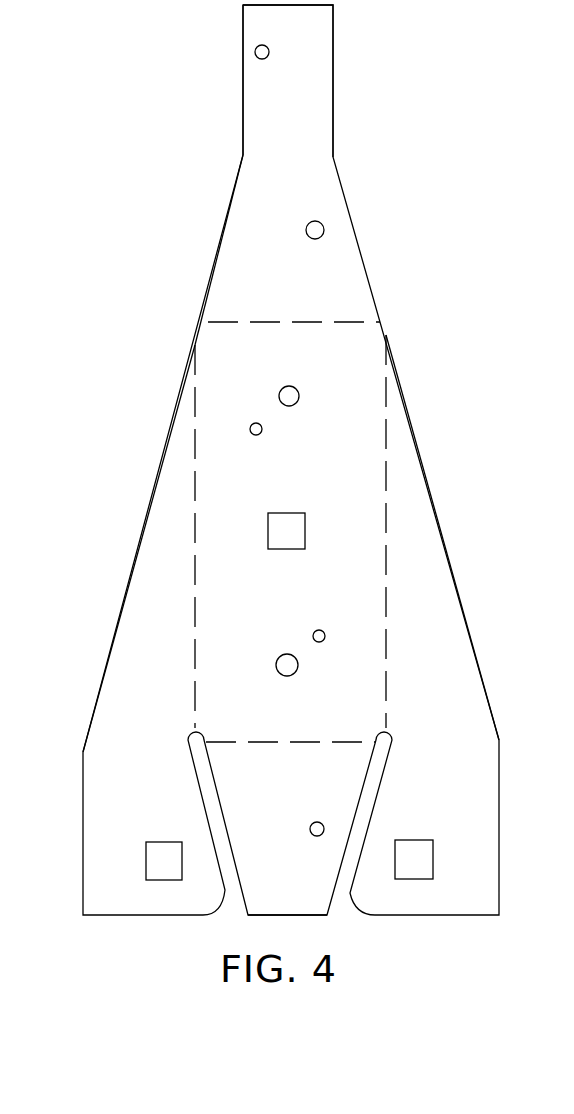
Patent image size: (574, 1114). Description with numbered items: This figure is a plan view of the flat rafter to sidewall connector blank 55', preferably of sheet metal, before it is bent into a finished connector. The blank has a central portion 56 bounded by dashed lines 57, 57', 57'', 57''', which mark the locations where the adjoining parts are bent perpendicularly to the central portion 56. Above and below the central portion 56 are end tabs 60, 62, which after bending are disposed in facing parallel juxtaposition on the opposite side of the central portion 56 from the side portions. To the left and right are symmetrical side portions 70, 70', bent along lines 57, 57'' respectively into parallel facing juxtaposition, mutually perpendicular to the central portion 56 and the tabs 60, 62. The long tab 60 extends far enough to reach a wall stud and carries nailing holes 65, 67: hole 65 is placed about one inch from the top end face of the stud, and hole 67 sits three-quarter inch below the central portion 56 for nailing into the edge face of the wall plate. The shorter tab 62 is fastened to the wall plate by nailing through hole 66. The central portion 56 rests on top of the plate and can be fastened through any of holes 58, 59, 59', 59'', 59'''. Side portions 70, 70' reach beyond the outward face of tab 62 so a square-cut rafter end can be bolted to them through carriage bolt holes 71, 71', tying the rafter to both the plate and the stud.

The rafter to sidewall connector blank 55' is at (291, 460).
The central portion 56 is at (212, 391).
The dashed line 57 is at (142, 536).
The dashed line 57' is at (202, 727).
The dashed line 57'' is at (435, 531).
The dashed line 57''' is at (265, 304).
The hole 58 is at (280, 532).
The hole 59 is at (178, 646).
The hole 59' is at (199, 607).
The hole 59'' is at (372, 419).
The hole 59''' is at (283, 441).
The end tab 60 is at (252, 152).
The end tab 62 is at (300, 912).
The nailing hole 65 is at (255, 52).
The hole 66 is at (312, 834).
The nailing hole 67 is at (324, 230).
The side portion 70 is at (117, 548).
The side portion 70' is at (442, 537).
The carriage bolt hole 71 is at (111, 861).
The carriage bolt hole 71' is at (438, 859).